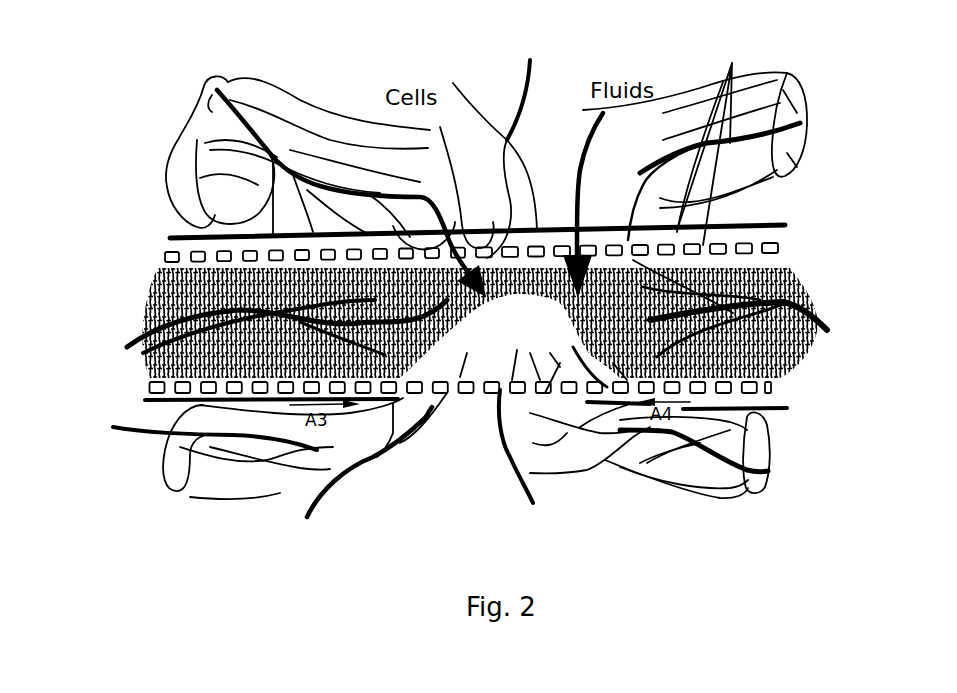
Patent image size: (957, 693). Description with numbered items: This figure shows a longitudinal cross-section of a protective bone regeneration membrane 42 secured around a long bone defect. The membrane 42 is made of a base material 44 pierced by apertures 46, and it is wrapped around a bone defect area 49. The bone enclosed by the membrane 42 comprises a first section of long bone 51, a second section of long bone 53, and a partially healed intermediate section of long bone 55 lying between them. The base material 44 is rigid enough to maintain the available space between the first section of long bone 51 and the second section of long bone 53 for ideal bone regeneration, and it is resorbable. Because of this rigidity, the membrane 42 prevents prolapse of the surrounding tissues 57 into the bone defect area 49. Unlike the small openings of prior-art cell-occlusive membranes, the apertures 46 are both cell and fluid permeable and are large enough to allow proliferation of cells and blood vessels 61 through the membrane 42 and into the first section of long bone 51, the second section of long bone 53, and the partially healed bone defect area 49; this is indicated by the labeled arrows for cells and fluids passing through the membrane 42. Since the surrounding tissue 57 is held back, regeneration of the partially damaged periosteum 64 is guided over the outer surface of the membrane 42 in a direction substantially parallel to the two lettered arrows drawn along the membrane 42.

The protective bone regeneration membrane 42 is at (780, 243).
The base material 44 is at (218, 251).
The apertures 46 is at (225, 273).
The bone defect area 49 is at (540, 352).
The first section of long bone 51 is at (160, 355).
The second section of long bone 53 is at (770, 343).
The partially healed intermediate section of long bone 55 is at (490, 300).
The surrounding tissues 57 is at (773, 90).
The blood vessels 61 is at (709, 140).
The partially damaged periosteum 64 is at (783, 412).